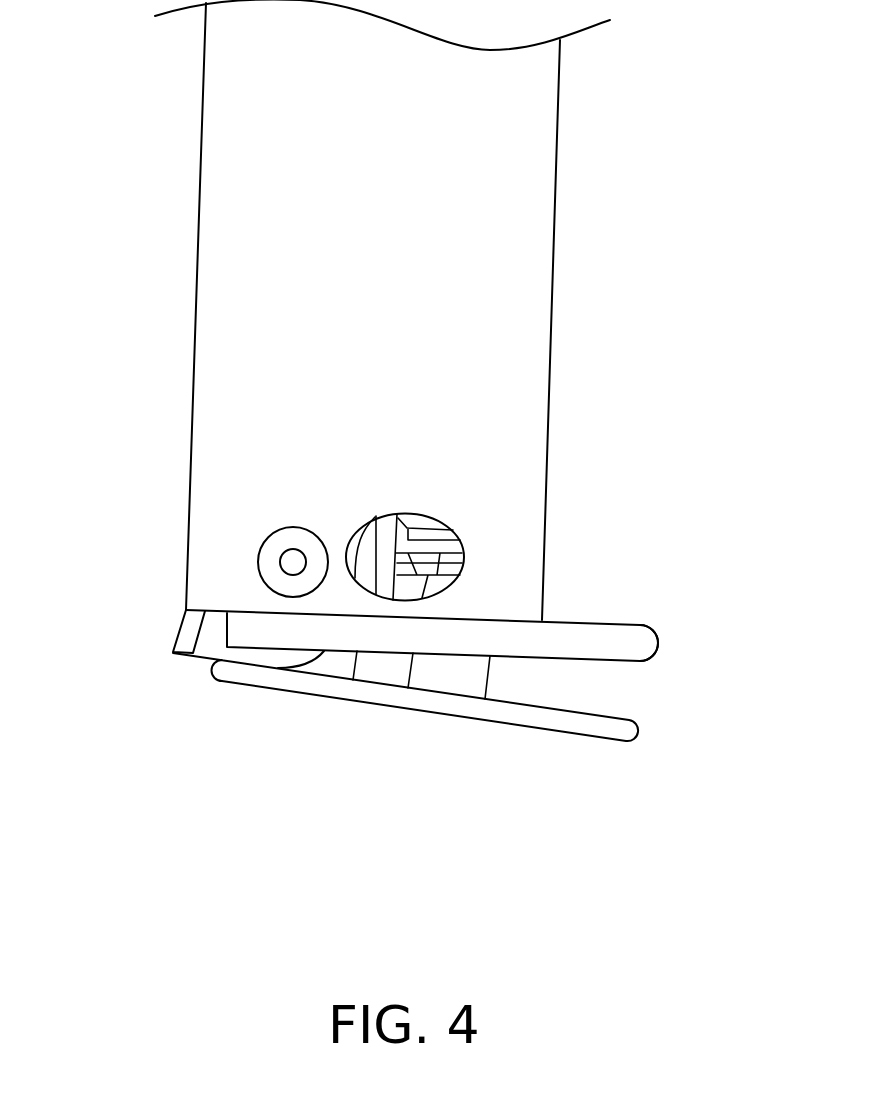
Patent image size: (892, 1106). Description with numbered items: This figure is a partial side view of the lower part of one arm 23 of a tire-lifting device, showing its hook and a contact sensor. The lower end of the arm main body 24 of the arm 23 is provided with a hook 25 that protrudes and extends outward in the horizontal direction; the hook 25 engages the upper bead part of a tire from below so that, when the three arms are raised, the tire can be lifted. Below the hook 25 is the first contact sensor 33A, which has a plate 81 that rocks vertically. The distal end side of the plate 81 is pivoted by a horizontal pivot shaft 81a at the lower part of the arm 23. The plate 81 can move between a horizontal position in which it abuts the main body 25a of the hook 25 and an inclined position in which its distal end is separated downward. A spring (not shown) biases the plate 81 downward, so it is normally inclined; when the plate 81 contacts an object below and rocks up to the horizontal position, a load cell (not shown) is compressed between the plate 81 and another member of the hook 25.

The arm 23 is at (554, 243).
The arm main body 24 is at (520, 406).
The hook 25 is at (664, 610).
The main body of the hook 25a is at (647, 645).
The first contact sensor 33A is at (442, 737).
The plate 81 is at (616, 728).
The pivot shaft 81a is at (293, 562).